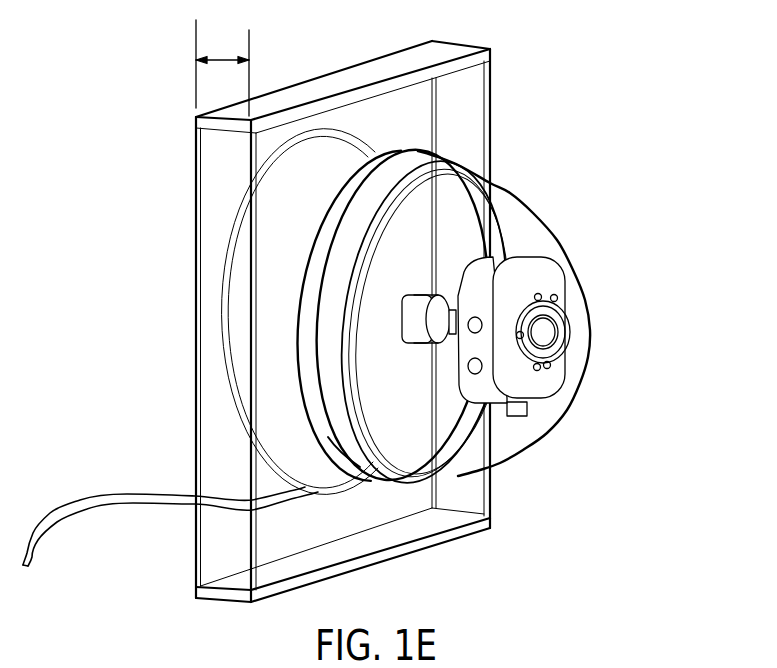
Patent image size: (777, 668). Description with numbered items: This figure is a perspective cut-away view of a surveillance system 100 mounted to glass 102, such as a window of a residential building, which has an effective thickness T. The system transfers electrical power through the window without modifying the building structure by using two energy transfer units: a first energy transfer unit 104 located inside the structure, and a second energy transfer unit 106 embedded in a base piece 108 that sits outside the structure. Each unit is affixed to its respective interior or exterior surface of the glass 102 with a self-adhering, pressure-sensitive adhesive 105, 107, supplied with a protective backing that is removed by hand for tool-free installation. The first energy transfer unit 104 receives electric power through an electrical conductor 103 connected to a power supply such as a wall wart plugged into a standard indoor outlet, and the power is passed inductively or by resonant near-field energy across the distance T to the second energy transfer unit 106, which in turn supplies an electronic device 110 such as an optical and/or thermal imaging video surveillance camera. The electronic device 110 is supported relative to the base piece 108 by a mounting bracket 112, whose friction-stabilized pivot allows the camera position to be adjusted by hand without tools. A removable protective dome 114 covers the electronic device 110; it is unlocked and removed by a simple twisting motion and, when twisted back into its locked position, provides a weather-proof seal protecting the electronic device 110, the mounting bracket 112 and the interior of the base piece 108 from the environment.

The surveillance system 100 is at (374, 311).
The glass 102 is at (196, 274).
The electrical conductor 103 is at (78, 507).
The first energy transfer unit 104 is at (217, 353).
The self-adhering pressure-sensitive adhesive 105 is at (256, 200).
The second energy transfer unit 106 is at (342, 455).
The self-adhering pressure-sensitive adhesive 107 is at (302, 263).
The base piece 108 is at (347, 466).
The electronic device 110 is at (550, 383).
The mounting bracket 112 is at (428, 345).
The protective dome 114 is at (533, 205).